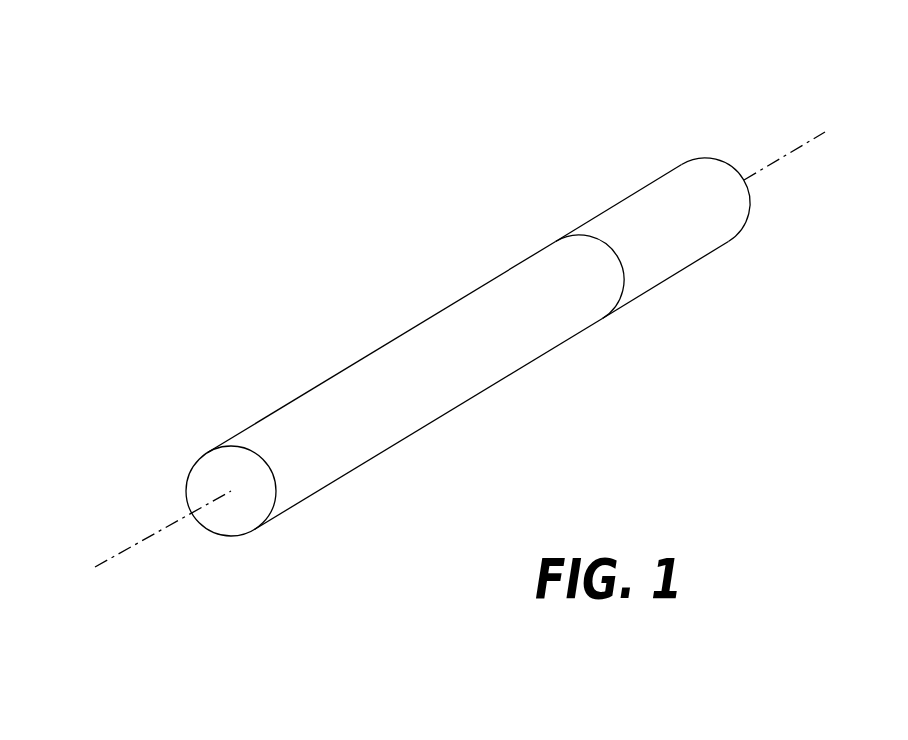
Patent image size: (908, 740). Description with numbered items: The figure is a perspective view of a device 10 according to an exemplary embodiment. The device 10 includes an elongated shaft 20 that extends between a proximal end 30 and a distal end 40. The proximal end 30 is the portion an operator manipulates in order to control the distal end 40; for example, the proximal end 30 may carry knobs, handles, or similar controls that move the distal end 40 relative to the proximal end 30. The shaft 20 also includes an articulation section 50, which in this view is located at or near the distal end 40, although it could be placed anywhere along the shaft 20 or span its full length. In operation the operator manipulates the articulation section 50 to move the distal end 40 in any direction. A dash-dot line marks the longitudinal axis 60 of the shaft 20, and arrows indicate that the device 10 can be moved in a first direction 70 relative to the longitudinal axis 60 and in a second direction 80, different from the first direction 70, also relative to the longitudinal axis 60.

The device 10 is at (518, 390).
The shaft 20 is at (389, 446).
The proximal end 30 is at (199, 575).
The distal end 40 is at (766, 178).
The articulation section 50 is at (707, 225).
The longitudinal axis 60 is at (770, 145).
The first direction 70 is at (713, 283).
The second direction 80 is at (767, 213).